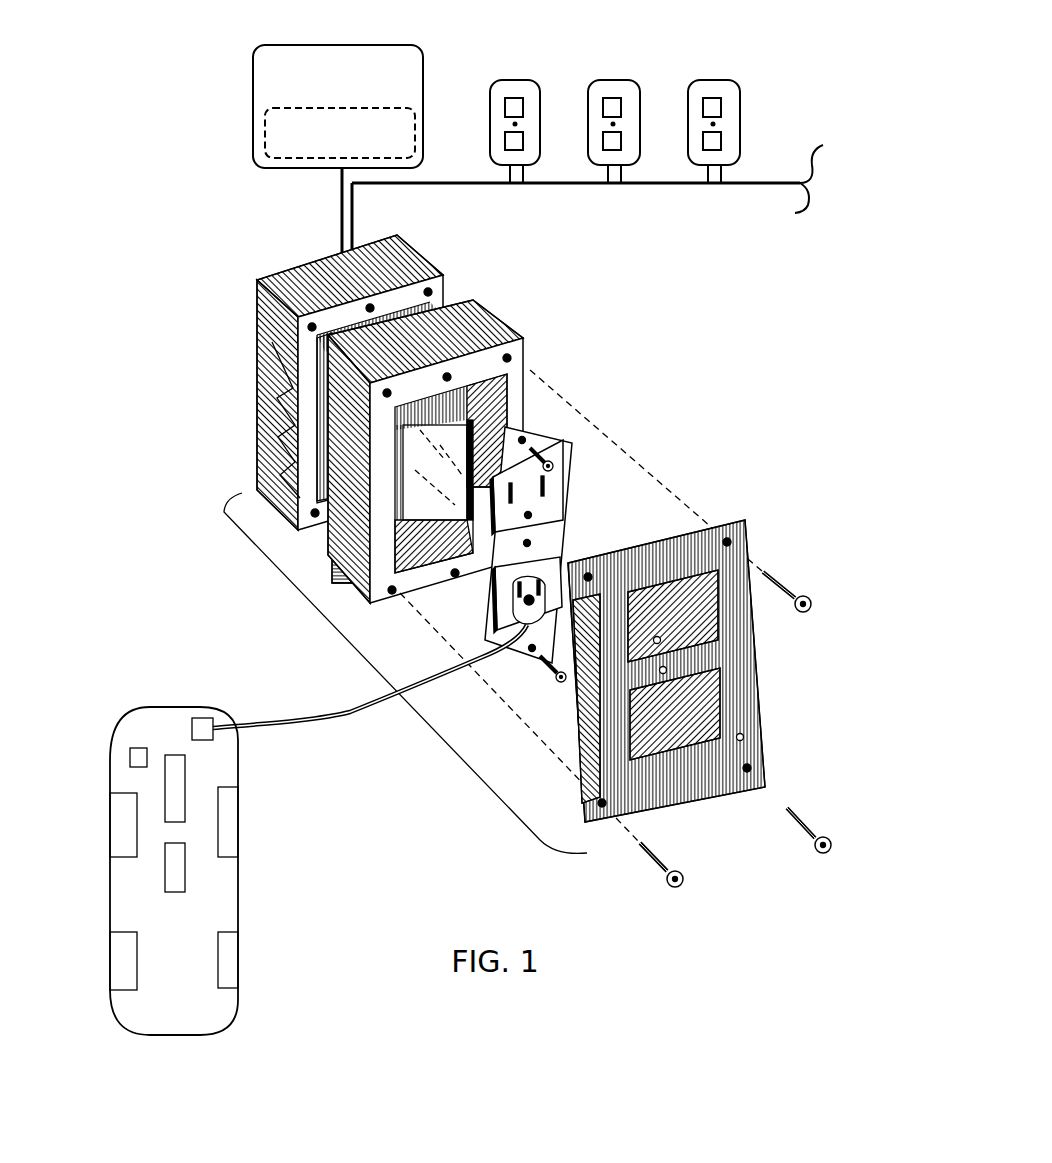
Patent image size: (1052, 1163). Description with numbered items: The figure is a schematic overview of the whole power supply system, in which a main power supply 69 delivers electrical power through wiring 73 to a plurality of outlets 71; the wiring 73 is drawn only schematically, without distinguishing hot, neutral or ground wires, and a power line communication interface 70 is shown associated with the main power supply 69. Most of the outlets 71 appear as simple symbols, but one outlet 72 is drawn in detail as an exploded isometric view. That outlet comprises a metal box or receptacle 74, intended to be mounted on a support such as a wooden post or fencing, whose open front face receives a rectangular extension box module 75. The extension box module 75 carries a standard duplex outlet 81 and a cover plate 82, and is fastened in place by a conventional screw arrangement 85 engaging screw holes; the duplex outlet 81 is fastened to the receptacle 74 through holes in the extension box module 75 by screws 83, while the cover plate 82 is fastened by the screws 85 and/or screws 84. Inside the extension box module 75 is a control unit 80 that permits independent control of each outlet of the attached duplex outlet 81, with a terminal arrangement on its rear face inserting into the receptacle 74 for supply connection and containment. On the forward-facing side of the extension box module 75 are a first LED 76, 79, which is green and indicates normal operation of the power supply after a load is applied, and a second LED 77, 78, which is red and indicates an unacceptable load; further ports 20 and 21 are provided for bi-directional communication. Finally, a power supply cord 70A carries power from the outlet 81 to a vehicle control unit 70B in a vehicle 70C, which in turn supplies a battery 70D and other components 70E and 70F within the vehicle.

The main power supply 69 is at (253, 90).
The power line communication interface 70 is at (263, 140).
The outlets 71 is at (512, 80).
The outlet shown in exploded isometric view 72 is at (365, 655).
The wiring 73 is at (340, 230).
The receptacle 74 is at (448, 243).
The extension box module 75 is at (520, 306).
The first LED 76 is at (272, 342).
The second LED 77 is at (340, 397).
The port 20 is at (340, 423).
The port 21 is at (340, 463).
The second LED 78 is at (343, 537).
The first LED 79 is at (343, 565).
The control unit 80 is at (487, 577).
The standard duplex outlet 81 is at (577, 488).
The cover plate 82 is at (745, 520).
The screws 83 is at (555, 462).
The screws 84 is at (742, 737).
The screw arrangement 85 is at (695, 550).
The power supply cord 70A is at (347, 715).
The vehicle control unit 70B is at (200, 718).
The vehicle 70C is at (240, 860).
The battery 70D is at (133, 748).
The other component 70E is at (178, 785).
The other component 70F is at (178, 860).